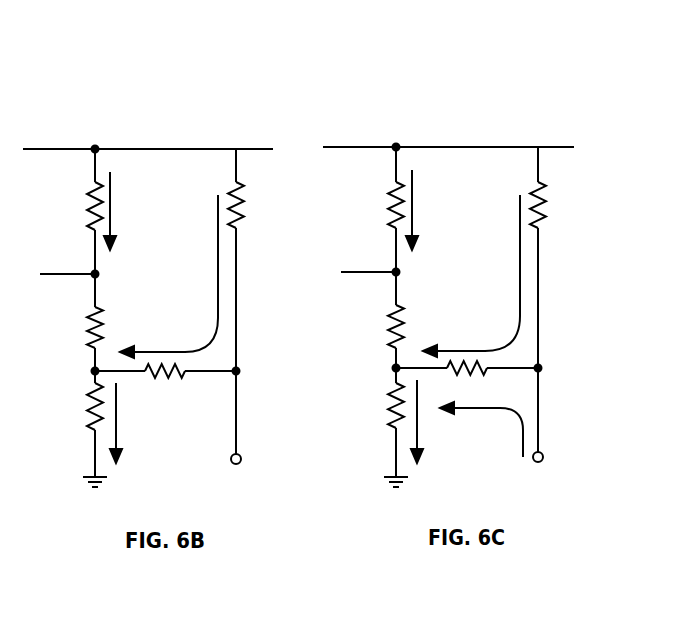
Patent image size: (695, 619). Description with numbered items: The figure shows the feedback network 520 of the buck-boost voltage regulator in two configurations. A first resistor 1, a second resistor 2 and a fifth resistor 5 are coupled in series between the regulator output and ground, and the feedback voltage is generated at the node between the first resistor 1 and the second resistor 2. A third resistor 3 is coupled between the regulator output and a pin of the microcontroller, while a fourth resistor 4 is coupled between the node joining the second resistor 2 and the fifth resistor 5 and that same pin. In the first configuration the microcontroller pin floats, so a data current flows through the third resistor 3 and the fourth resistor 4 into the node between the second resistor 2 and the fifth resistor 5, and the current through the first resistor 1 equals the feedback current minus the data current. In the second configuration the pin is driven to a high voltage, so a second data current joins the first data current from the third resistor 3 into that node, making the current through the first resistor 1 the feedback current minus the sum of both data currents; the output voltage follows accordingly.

In FIG. 6B, the feedback network 520 is at (140, 259).
In FIG. 6C, the feedback network 520 is at (454, 258).
In FIG. 6B, the resistor R1 1 is at (82, 206).
In FIG. 6C, the resistor R1 1 is at (383, 205).
In FIG. 6B, the resistor R2 2 is at (82, 327).
In FIG. 6C, the resistor R2 2 is at (383, 326).
In FIG. 6B, the resistor R3 3 is at (250, 205).
In FIG. 6C, the resistor R3 3 is at (552, 205).
In FIG. 6B, the resistor R4 4 is at (165, 386).
In FIG. 6C, the resistor R4 4 is at (467, 384).
In FIG. 6B, the resistor R5 5 is at (83, 406).
In FIG. 6C, the resistor R5 5 is at (384, 405).